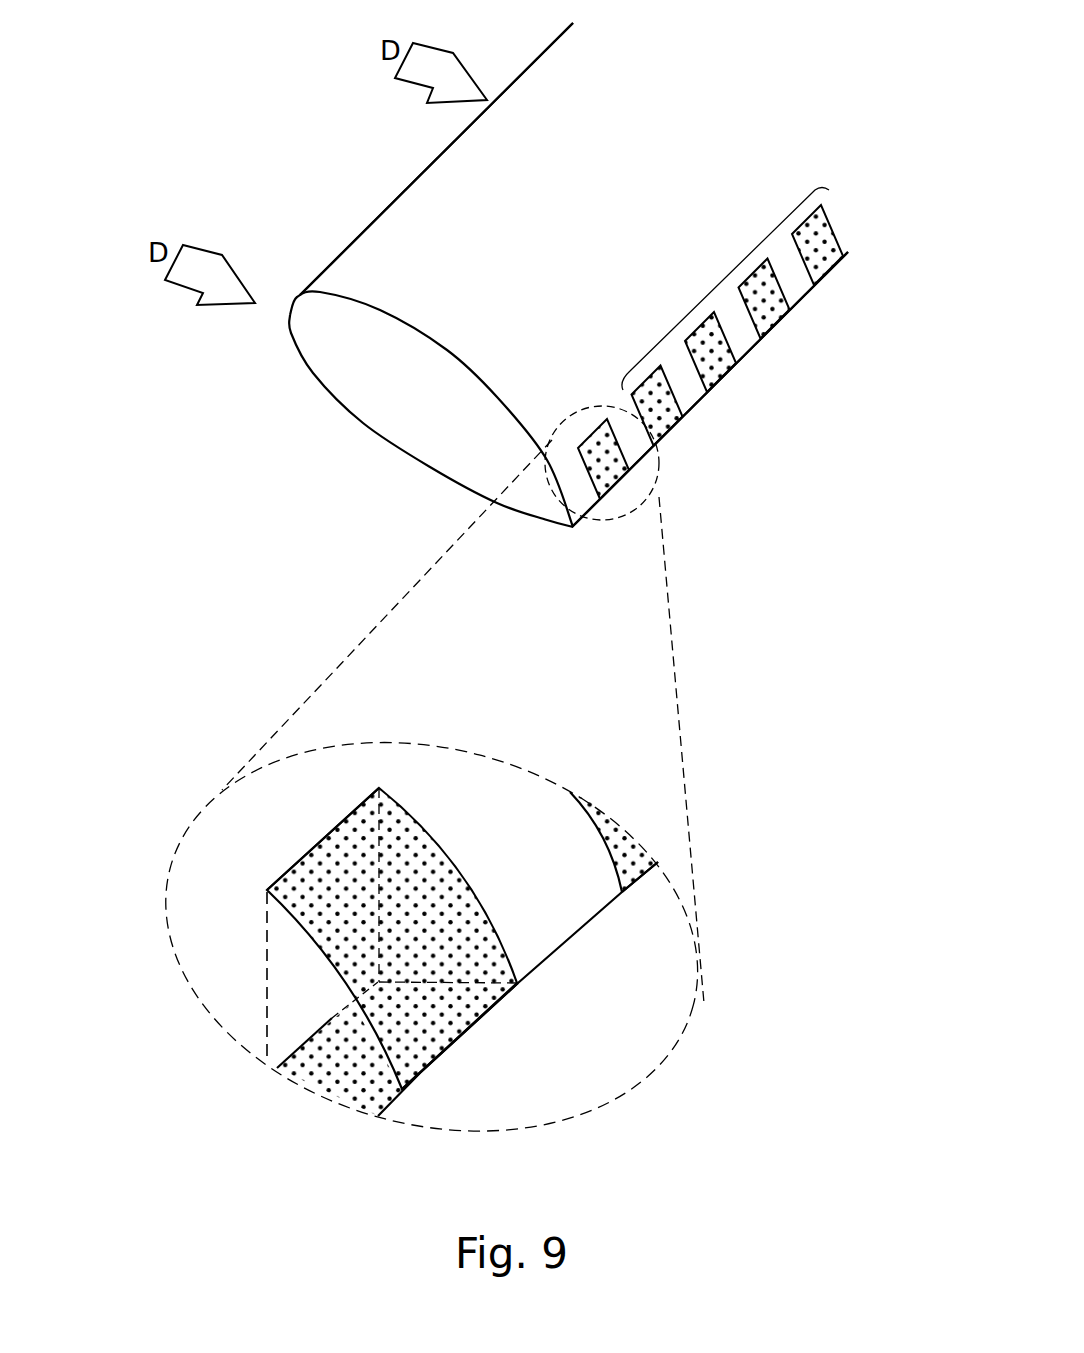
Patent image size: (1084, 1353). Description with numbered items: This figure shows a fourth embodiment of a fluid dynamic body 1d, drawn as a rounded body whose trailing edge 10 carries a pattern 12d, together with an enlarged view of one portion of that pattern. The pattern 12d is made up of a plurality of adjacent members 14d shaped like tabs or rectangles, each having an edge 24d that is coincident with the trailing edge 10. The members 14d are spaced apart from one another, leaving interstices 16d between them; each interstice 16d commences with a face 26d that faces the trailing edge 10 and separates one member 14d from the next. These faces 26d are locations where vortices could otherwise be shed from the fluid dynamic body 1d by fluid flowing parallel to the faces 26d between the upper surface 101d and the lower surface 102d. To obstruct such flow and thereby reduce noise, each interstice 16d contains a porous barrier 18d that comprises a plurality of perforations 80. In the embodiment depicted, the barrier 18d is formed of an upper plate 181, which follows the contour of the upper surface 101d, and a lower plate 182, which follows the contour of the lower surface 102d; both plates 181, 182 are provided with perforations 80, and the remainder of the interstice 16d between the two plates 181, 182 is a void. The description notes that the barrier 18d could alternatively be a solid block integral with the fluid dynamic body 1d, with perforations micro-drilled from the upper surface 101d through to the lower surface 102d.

The fluid dynamic body 1d is at (427, 196).
The upper surface 101d is at (417, 298).
The lower surface 102d is at (402, 397).
The trailing edge 10 is at (752, 350).
The pattern 12d is at (713, 300).
The adjacent member 14d is at (793, 287).
The interstice 16d is at (763, 312).
The porous barrier 18d is at (657, 423).
The perforation 80 is at (593, 428).
The upper plate 181 is at (442, 862).
The lower plate 182 is at (311, 1075).
The face 26d is at (280, 938).
The edge 24d is at (617, 903).